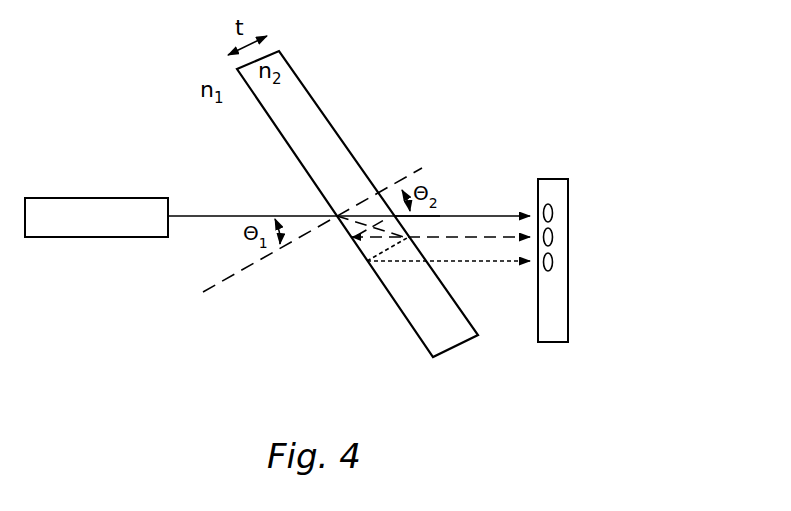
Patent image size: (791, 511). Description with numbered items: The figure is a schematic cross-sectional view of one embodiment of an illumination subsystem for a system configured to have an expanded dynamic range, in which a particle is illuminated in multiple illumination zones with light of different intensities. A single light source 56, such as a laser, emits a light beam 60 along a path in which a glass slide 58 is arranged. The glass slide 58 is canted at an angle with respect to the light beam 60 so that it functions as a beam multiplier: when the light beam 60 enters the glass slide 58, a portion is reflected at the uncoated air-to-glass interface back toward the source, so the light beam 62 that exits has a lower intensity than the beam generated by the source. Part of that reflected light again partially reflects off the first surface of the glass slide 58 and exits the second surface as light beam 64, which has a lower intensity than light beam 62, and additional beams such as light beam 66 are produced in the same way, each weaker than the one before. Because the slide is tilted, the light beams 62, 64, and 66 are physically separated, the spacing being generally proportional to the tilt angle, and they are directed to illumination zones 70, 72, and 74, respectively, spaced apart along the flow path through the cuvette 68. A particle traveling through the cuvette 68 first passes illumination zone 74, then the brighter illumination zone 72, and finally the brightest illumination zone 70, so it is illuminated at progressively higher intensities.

The single light source 56 is at (95, 198).
The glass slide 58 is at (455, 348).
The light beam 60 is at (233, 216).
The light beam 62 is at (442, 215).
The light beam 64 is at (478, 236).
The light beam 66 is at (457, 263).
The cuvette 68 is at (568, 312).
The illumination zone 70 is at (551, 210).
The illumination zone 72 is at (551, 234).
The illumination zone 74 is at (551, 259).